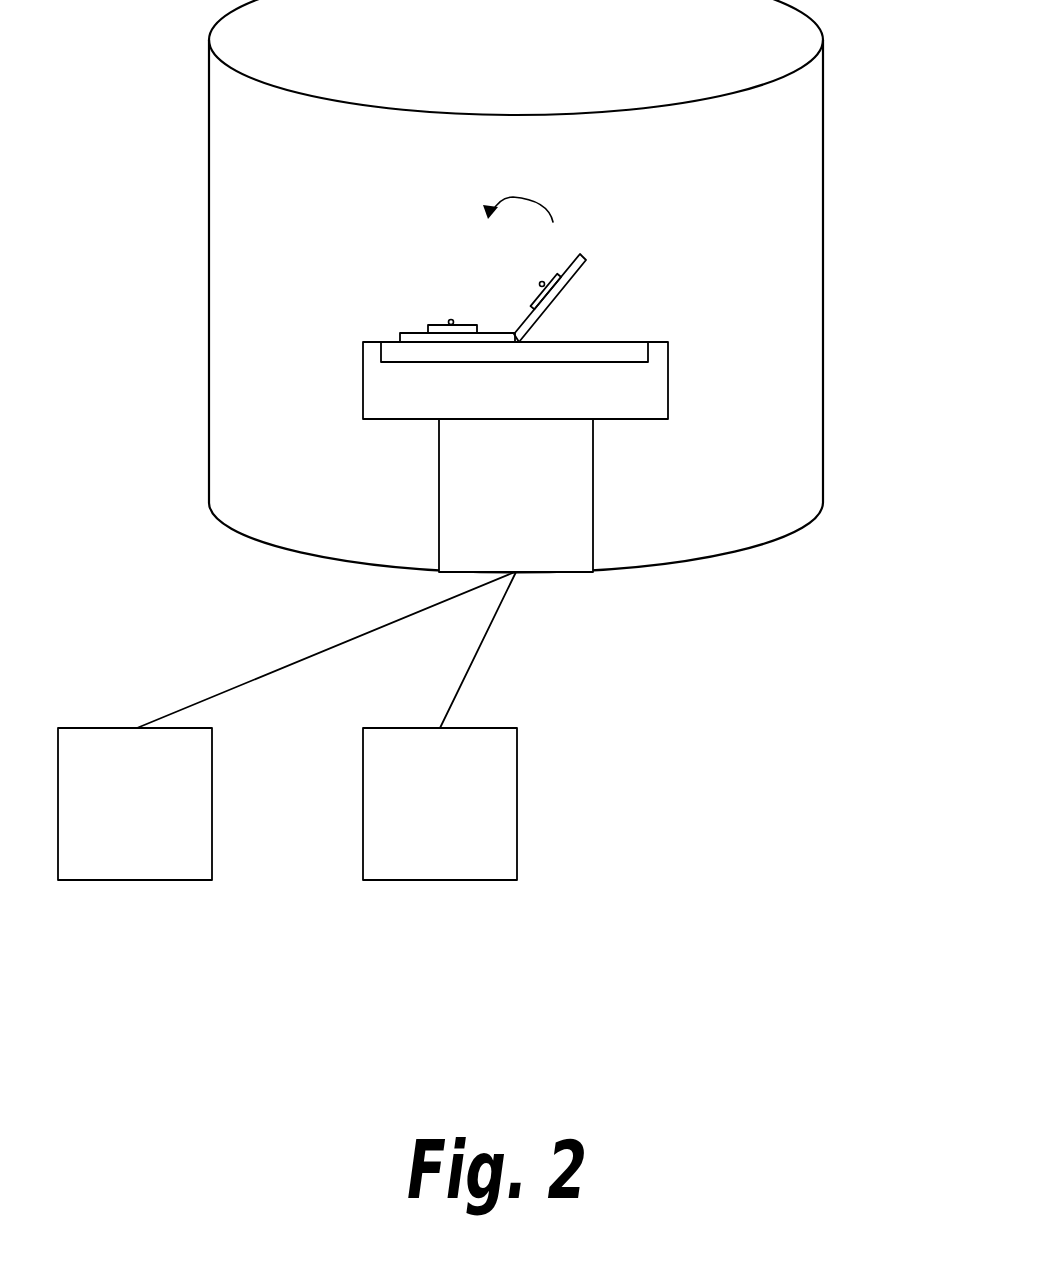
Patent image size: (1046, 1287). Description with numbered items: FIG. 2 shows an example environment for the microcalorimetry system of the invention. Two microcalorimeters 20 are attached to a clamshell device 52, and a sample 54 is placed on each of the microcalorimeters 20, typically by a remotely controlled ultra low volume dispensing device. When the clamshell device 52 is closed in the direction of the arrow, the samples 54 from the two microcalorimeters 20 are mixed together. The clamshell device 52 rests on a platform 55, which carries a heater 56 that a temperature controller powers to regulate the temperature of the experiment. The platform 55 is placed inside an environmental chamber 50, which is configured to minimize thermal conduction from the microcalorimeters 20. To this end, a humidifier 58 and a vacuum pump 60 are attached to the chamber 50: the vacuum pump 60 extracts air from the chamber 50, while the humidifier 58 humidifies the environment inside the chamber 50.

The microcalorimeter 20 is at (428, 326).
The environmental chamber 50 is at (823, 264).
The clamshell device 52 is at (553, 298).
The sample 54 is at (540, 283).
The platform 55 is at (648, 342).
The heater 56 is at (552, 362).
The humidifier 58 is at (118, 728).
The vacuum pump 60 is at (472, 728).